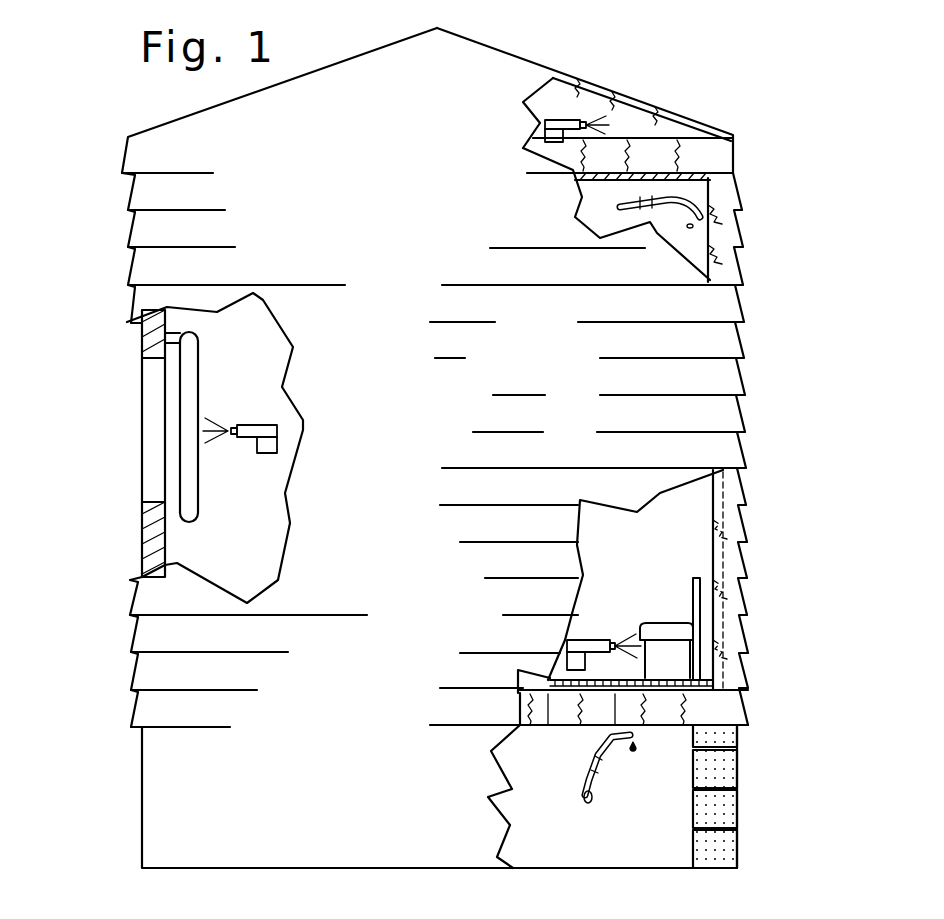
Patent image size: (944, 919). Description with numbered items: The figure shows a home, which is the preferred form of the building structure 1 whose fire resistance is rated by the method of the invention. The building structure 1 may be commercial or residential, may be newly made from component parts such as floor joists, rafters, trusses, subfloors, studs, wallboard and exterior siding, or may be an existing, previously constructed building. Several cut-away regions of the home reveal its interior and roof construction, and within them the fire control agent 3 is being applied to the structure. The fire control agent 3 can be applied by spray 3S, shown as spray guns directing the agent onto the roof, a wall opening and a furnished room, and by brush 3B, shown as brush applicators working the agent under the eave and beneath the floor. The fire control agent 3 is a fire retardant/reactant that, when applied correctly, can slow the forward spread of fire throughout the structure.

The building structure 1 is at (327, 181).
The fire control agent 3 is at (223, 450).
The spray 3S is at (277, 437).
The brush 3B is at (620, 207).